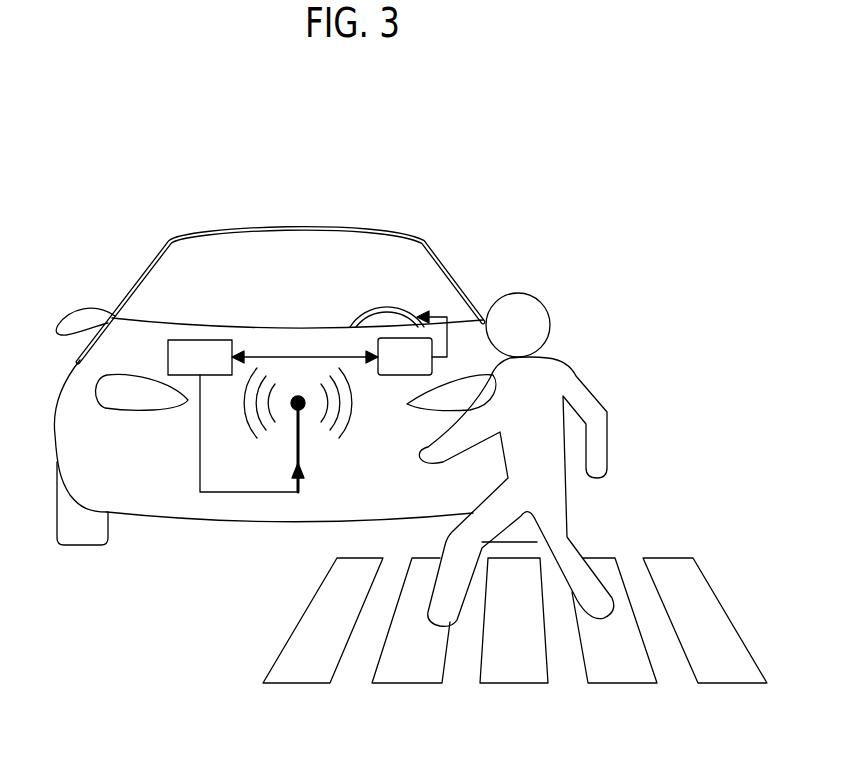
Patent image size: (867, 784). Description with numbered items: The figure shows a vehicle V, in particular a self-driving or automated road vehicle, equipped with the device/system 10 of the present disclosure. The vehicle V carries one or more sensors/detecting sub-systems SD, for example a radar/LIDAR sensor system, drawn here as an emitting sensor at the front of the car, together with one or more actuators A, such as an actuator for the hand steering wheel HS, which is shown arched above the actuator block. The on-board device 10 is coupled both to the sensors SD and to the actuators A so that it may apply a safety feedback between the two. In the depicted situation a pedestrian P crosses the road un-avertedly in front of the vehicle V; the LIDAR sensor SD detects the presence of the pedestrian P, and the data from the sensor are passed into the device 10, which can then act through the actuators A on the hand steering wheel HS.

The vehicle V is at (275, 224).
The device/system 10 is at (195, 355).
The actuators A is at (394, 374).
The hand steering wheel HS is at (387, 307).
The sensors/detecting sub-systems SD is at (287, 440).
The pedestrian P is at (612, 380).